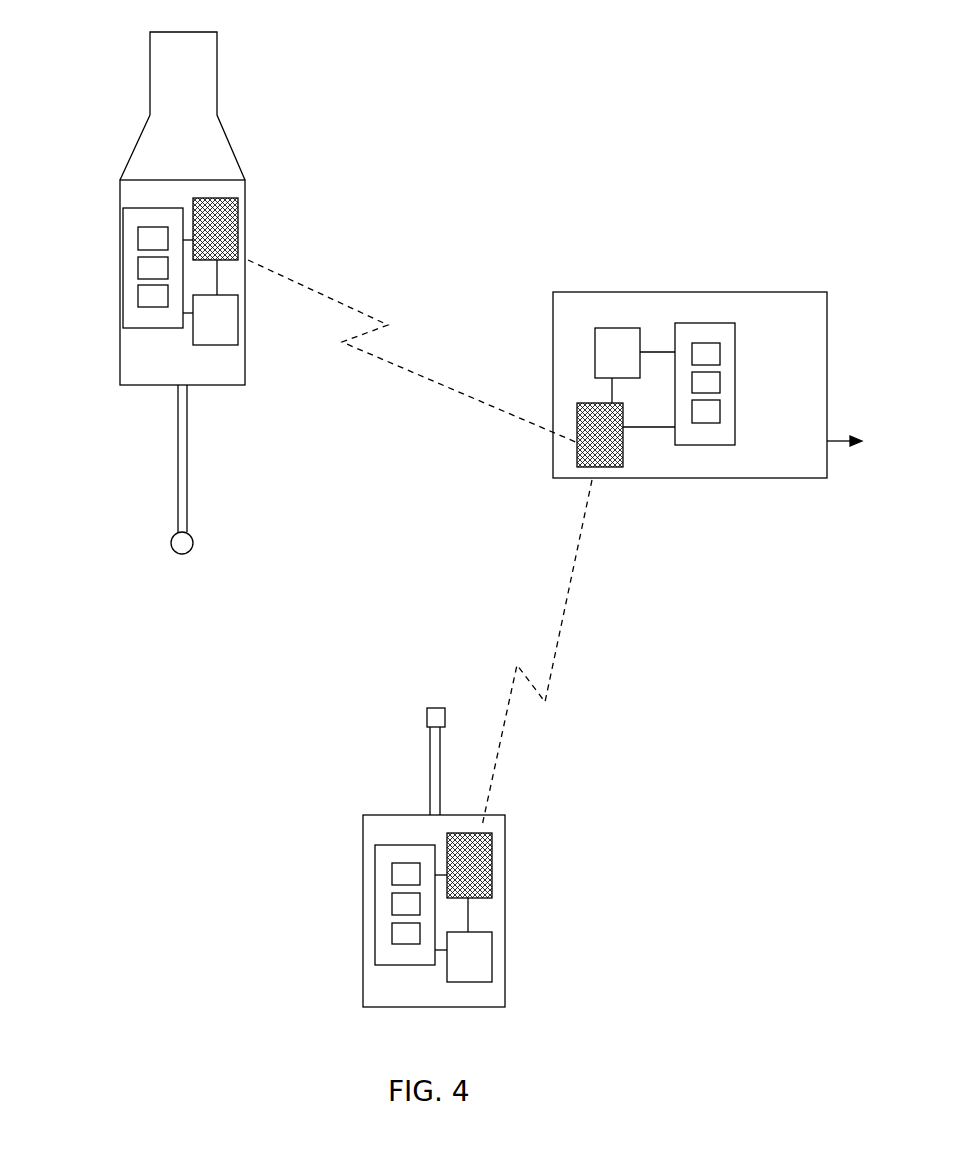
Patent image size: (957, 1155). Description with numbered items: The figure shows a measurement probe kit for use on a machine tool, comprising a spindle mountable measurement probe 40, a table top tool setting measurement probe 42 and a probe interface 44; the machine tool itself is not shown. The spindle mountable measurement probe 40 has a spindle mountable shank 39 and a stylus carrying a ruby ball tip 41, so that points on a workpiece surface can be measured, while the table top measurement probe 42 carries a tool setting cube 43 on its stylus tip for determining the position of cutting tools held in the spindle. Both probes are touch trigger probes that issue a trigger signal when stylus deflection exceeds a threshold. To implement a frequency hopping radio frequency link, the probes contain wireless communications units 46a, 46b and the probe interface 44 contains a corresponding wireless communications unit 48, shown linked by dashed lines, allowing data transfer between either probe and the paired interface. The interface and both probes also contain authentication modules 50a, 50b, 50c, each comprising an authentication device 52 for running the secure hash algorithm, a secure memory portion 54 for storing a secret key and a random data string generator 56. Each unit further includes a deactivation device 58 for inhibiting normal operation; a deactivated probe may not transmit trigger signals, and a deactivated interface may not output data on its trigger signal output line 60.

The spindle mountable shank 39 is at (194, 115).
The spindle mountable measurement probe 40 is at (249, 181).
The ruby ball tip 41 is at (182, 556).
The table top measurement probe 42 is at (506, 932).
The tool setting cube 43 is at (427, 717).
The probe interface 44 is at (690, 481).
The wireless communications unit 46a is at (240, 232).
The wireless communications unit 46b is at (493, 866).
The wireless communications unit 48 is at (577, 412).
The authentication module 50a is at (157, 207).
The authentication module 50b is at (405, 843).
The authentication module 50c is at (708, 322).
The authentication device 52 is at (137, 237).
The secure memory portion 54 is at (137, 266).
The random data string generator 56 is at (137, 296).
The deactivation device 58 is at (225, 330).
The trigger signal output line 60 is at (843, 446).